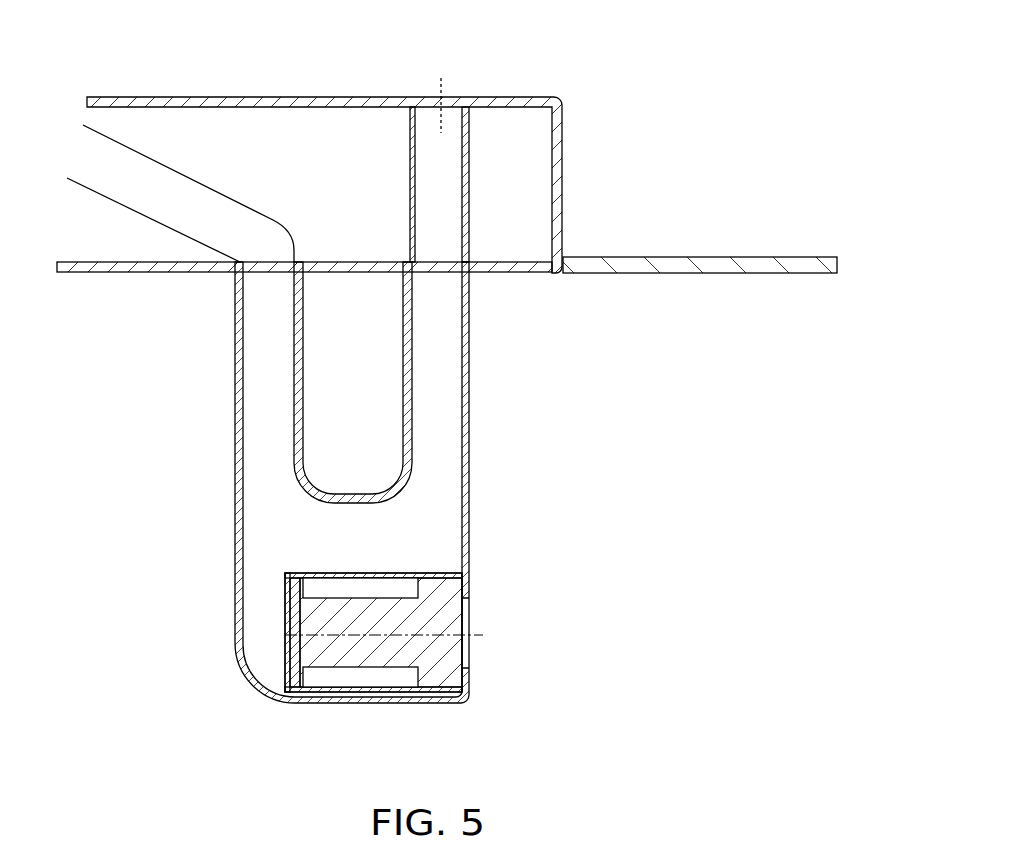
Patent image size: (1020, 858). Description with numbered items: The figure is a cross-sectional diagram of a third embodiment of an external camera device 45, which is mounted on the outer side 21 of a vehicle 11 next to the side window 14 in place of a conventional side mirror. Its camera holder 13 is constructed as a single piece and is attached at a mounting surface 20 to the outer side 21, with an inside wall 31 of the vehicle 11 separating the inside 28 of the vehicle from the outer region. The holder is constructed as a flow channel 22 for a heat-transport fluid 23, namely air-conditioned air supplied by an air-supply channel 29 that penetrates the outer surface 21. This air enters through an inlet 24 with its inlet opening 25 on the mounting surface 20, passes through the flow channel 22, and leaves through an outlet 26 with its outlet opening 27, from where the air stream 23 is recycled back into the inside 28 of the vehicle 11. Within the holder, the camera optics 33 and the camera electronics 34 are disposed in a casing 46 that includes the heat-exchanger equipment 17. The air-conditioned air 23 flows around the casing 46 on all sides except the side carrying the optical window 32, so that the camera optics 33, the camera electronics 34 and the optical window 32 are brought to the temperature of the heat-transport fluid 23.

The vehicle 11 is at (752, 100).
The camera holder 13 is at (235, 450).
The side window 14 is at (714, 257).
The heat-exchanger equipment 17 is at (296, 573).
The mounting surface 20 is at (364, 285).
The outer side 21 is at (133, 273).
The flow channel 22 is at (258, 468).
The heat-transport fluid 23 is at (62, 147).
The inlet 24 is at (268, 283).
The inlet opening 25 is at (266, 262).
The outlet 26 is at (441, 286).
The outlet opening 27 is at (434, 262).
The inside of the vehicle 28 is at (502, 61).
The air-supply channel 29 is at (165, 168).
The inside wall 31 is at (336, 97).
The optical window 32 is at (470, 624).
The camera optics 33 is at (444, 676).
The camera electronics 34 is at (298, 692).
The external camera device 45 is at (136, 649).
The casing 46 is at (380, 573).